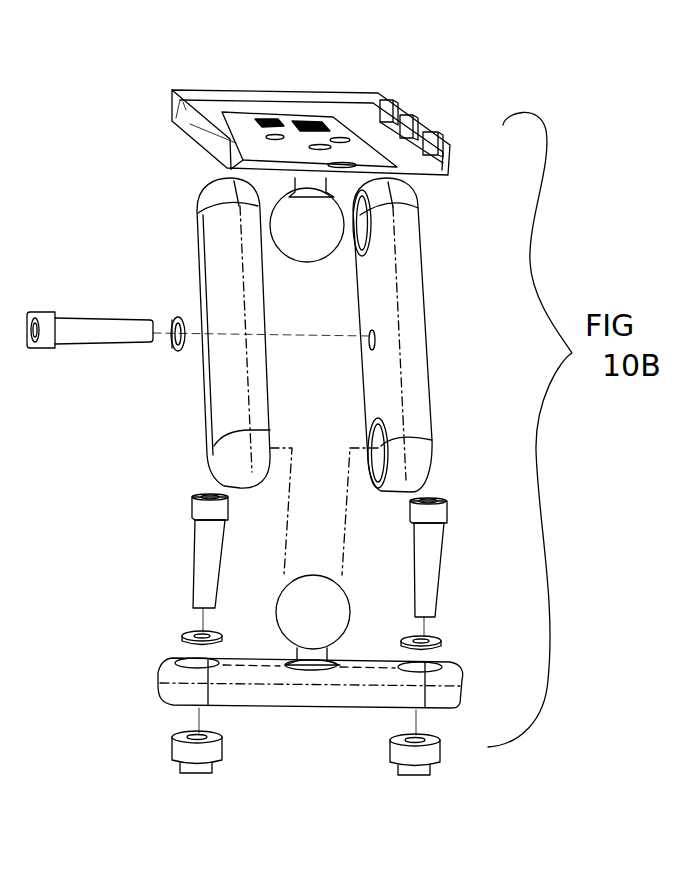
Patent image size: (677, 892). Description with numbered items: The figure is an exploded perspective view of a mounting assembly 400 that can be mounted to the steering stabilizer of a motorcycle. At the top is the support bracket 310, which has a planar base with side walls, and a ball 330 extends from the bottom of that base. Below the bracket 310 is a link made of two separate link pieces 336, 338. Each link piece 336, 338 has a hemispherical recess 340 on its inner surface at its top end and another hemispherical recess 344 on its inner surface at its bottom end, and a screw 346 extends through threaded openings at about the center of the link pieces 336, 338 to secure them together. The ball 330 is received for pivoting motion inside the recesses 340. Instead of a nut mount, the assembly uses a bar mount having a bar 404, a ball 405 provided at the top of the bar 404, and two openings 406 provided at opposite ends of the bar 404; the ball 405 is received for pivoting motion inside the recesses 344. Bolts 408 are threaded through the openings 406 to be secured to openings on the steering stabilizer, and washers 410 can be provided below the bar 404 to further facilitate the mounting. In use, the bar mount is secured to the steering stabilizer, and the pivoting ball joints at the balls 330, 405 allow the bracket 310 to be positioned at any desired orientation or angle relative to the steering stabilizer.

The support bracket 310 is at (413, 96).
The ball 330 is at (307, 241).
The link piece 336 is at (207, 243).
The link piece 338 is at (413, 287).
The hemispherical recess 340 is at (365, 237).
The hemispherical recess 344 is at (378, 440).
The screw 346 is at (113, 333).
The mounting assembly 400 is at (540, 429).
The bar 404 is at (314, 698).
The ball 405 is at (337, 607).
The opening 406 is at (180, 663).
The bolt 408 is at (203, 553).
The washer 410 is at (170, 745).